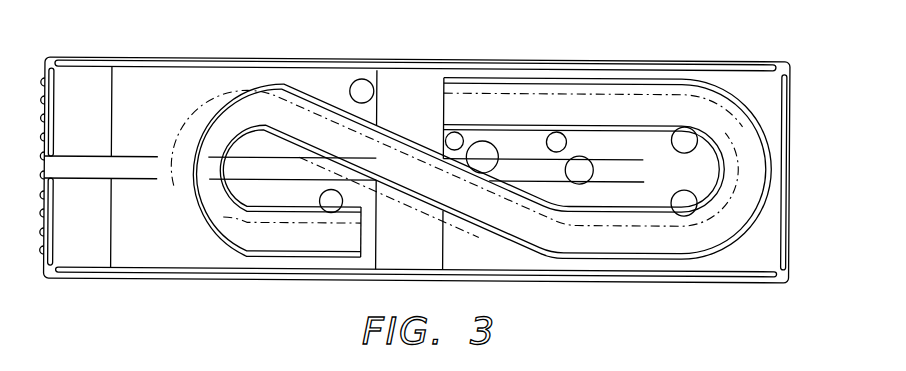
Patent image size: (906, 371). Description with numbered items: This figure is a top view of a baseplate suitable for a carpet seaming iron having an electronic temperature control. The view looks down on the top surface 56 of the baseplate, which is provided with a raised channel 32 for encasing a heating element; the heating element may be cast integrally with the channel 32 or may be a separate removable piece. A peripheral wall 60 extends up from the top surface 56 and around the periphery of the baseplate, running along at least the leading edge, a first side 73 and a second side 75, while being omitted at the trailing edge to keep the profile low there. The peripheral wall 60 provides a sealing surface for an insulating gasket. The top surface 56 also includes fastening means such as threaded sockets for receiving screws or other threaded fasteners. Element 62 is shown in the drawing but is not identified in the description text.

The raised channel 32 is at (678, 88).
The top surface 56 is at (747, 80).
The peripheral wall 60 is at (790, 233).
The end compartment 62 is at (93, 90).
The first side 73 is at (413, 57).
The second side 75 is at (592, 277).